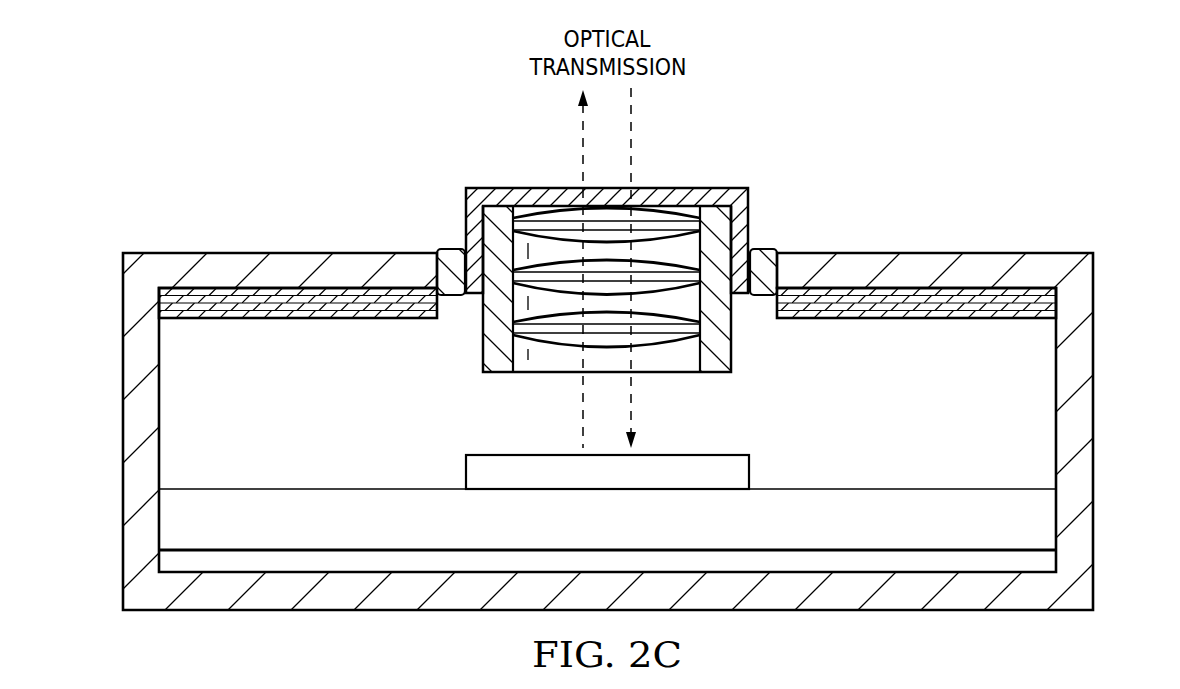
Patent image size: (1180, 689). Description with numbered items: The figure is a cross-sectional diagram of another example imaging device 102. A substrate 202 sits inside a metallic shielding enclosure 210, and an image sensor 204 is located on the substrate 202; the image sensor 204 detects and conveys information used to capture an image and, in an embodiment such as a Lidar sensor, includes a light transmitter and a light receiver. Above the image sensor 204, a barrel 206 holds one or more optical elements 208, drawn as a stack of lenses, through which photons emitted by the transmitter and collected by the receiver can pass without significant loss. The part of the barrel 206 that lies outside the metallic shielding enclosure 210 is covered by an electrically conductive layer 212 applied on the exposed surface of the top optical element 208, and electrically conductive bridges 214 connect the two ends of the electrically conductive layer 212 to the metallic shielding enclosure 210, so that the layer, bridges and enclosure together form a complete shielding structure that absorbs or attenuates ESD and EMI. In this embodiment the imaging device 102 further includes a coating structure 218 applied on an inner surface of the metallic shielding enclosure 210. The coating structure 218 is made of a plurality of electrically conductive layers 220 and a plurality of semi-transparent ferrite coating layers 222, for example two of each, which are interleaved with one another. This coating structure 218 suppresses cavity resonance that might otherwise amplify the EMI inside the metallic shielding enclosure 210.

The imaging device 102 is at (288, 88).
The substrate 202 is at (877, 500).
The image sensor 204 is at (474, 470).
The barrel 206 is at (493, 340).
The optical elements 208 is at (541, 212).
The metallic shielding enclosure 210 is at (130, 456).
The electrically conductive layer 212 is at (700, 189).
The electrically conductive bridges 214 is at (458, 252).
The coating structure 218 is at (1037, 328).
The electrically conductive layers 220 is at (233, 295).
The ferrite coating layers 222 is at (307, 302).